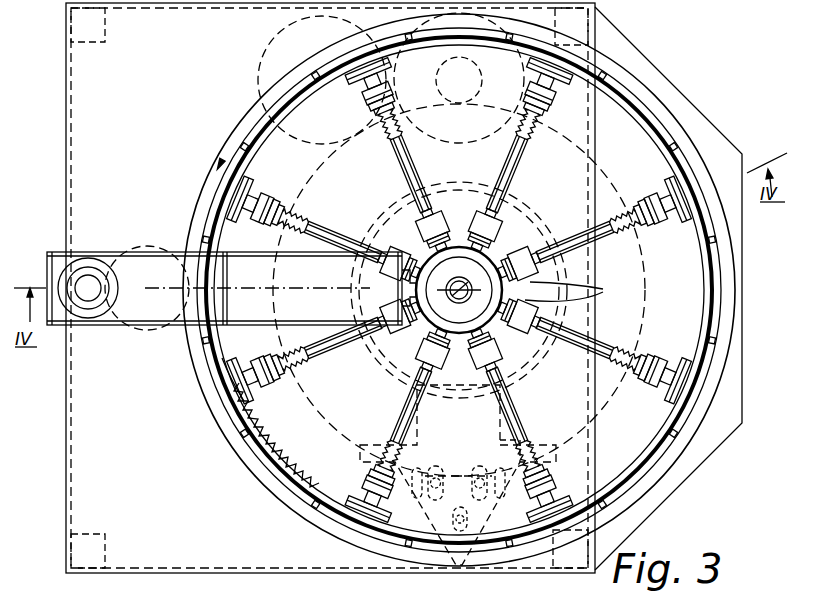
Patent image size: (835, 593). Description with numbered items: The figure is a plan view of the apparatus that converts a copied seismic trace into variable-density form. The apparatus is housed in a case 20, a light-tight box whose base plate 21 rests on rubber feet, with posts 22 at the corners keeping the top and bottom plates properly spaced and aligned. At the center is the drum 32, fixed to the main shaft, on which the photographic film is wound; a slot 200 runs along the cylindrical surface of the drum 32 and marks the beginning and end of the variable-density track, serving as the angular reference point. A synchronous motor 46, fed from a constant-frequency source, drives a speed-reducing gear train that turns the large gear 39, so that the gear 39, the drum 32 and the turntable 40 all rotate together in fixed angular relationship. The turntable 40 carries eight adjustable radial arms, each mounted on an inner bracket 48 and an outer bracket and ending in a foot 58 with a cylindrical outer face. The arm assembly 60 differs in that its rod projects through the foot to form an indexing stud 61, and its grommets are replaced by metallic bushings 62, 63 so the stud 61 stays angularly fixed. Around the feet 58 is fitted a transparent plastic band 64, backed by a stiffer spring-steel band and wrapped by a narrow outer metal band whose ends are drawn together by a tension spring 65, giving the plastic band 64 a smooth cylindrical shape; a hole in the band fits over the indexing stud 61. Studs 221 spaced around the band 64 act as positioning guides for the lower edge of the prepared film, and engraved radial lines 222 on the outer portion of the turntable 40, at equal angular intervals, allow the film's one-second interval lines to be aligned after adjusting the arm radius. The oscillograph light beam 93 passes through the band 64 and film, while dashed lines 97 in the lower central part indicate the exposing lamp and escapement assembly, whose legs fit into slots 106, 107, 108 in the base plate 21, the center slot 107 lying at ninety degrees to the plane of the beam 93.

The case 20 is at (155, 493).
The base plate 21 is at (700, 467).
The posts 22 is at (80, 34).
The drum 32 is at (536, 211).
The large gear 39 is at (334, 168).
The turntable 40 is at (193, 218).
The synchronous motor 46 is at (277, 42).
The inner bracket 48 is at (575, 290).
The foot 58 is at (351, 94).
The arm assembly 60 is at (252, 415).
The indexing stud 61 is at (220, 393).
The metallic bushing 62 is at (268, 350).
The metallic bushing 63 is at (418, 320).
The band 64 is at (205, 357).
The tension spring 65 is at (262, 477).
The oscillograph light beam 93 is at (283, 290).
The dashed lines 97 is at (415, 576).
The slot 106 is at (418, 499).
The center slot 107 is at (490, 509).
The slot 108 is at (503, 469).
The slot 200 is at (533, 365).
The studs 221 is at (588, 32).
The radial lines 222 is at (356, 44).